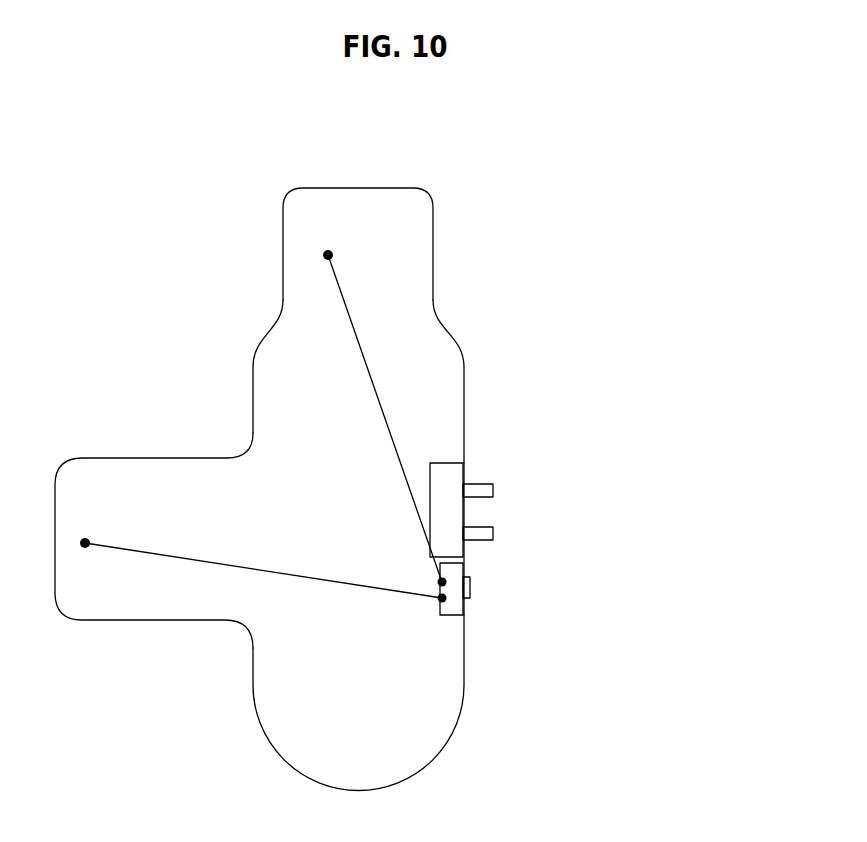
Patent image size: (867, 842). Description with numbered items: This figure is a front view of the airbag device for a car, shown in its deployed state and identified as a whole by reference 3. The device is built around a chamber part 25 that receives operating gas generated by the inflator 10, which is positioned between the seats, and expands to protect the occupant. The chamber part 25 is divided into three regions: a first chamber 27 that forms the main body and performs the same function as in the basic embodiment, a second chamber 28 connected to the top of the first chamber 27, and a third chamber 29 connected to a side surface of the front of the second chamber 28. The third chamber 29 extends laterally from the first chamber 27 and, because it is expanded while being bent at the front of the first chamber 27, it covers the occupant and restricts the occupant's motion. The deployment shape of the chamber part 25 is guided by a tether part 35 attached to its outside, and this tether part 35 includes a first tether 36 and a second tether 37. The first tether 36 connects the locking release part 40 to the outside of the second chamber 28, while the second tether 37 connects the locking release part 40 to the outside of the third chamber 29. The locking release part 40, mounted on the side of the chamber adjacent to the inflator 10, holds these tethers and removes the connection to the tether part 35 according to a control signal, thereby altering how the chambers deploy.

The vehicle body panel assembly 3 is at (470, 186).
The inflator 10 is at (452, 475).
The chamber part 25 is at (479, 322).
The first chamber 27 is at (382, 568).
The second chamber 28 is at (412, 247).
The third chamber 29 is at (90, 603).
The tether part 35 is at (300, 583).
The first tether 36 is at (387, 415).
The second tether 37 is at (173, 557).
The locking release part 40 is at (452, 608).